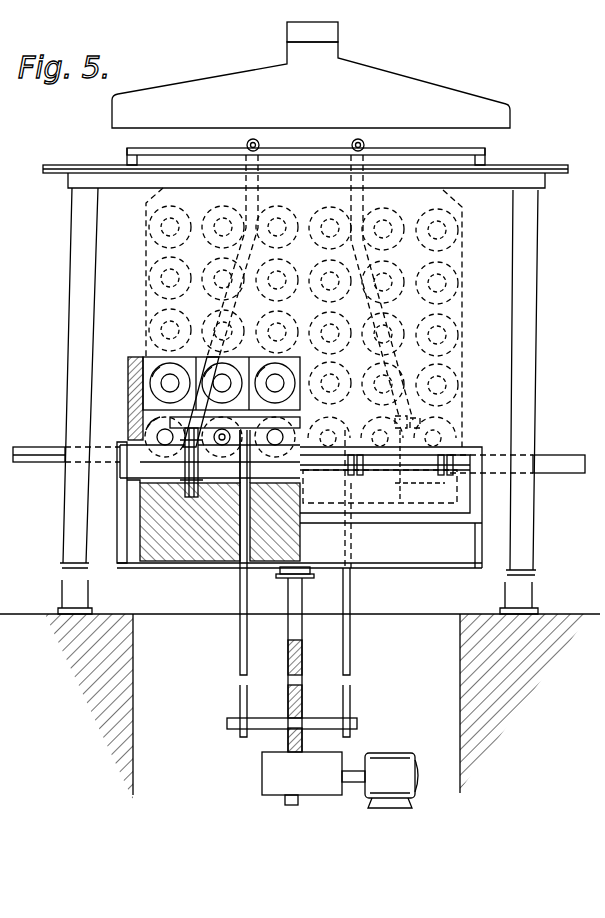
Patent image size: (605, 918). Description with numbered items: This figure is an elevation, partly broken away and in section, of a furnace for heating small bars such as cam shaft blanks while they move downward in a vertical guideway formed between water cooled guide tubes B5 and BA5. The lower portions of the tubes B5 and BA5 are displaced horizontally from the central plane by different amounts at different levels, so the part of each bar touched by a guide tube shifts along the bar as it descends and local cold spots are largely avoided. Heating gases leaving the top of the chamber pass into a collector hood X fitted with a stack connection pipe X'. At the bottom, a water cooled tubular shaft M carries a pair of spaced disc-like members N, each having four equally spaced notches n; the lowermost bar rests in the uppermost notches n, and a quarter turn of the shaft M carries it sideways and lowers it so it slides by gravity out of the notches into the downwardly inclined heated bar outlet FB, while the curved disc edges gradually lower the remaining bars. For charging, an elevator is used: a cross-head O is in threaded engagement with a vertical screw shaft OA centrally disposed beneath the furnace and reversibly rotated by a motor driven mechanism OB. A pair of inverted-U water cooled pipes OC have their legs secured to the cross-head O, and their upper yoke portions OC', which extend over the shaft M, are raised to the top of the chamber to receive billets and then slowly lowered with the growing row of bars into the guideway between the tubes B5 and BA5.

The collector hood X is at (311, 85).
The stack connection pipe X' is at (339, 33).
The water cooled guide tube BA5 is at (261, 146).
The rollers e is at (319, 322).
The roller shafts e' is at (327, 332).
The yoke portions OC' is at (301, 301).
The water cooled guide tube B5 is at (193, 381).
The water cooled tubular shaft M is at (40, 447).
The disc-like member N is at (185, 483).
The notch n is at (228, 452).
The heated bar outlet FB is at (442, 499).
The water cooled pipes OC is at (293, 583).
The vertical screw shaft OA is at (302, 651).
The cross-head O is at (311, 722).
The motor driven mechanism OB is at (310, 776).